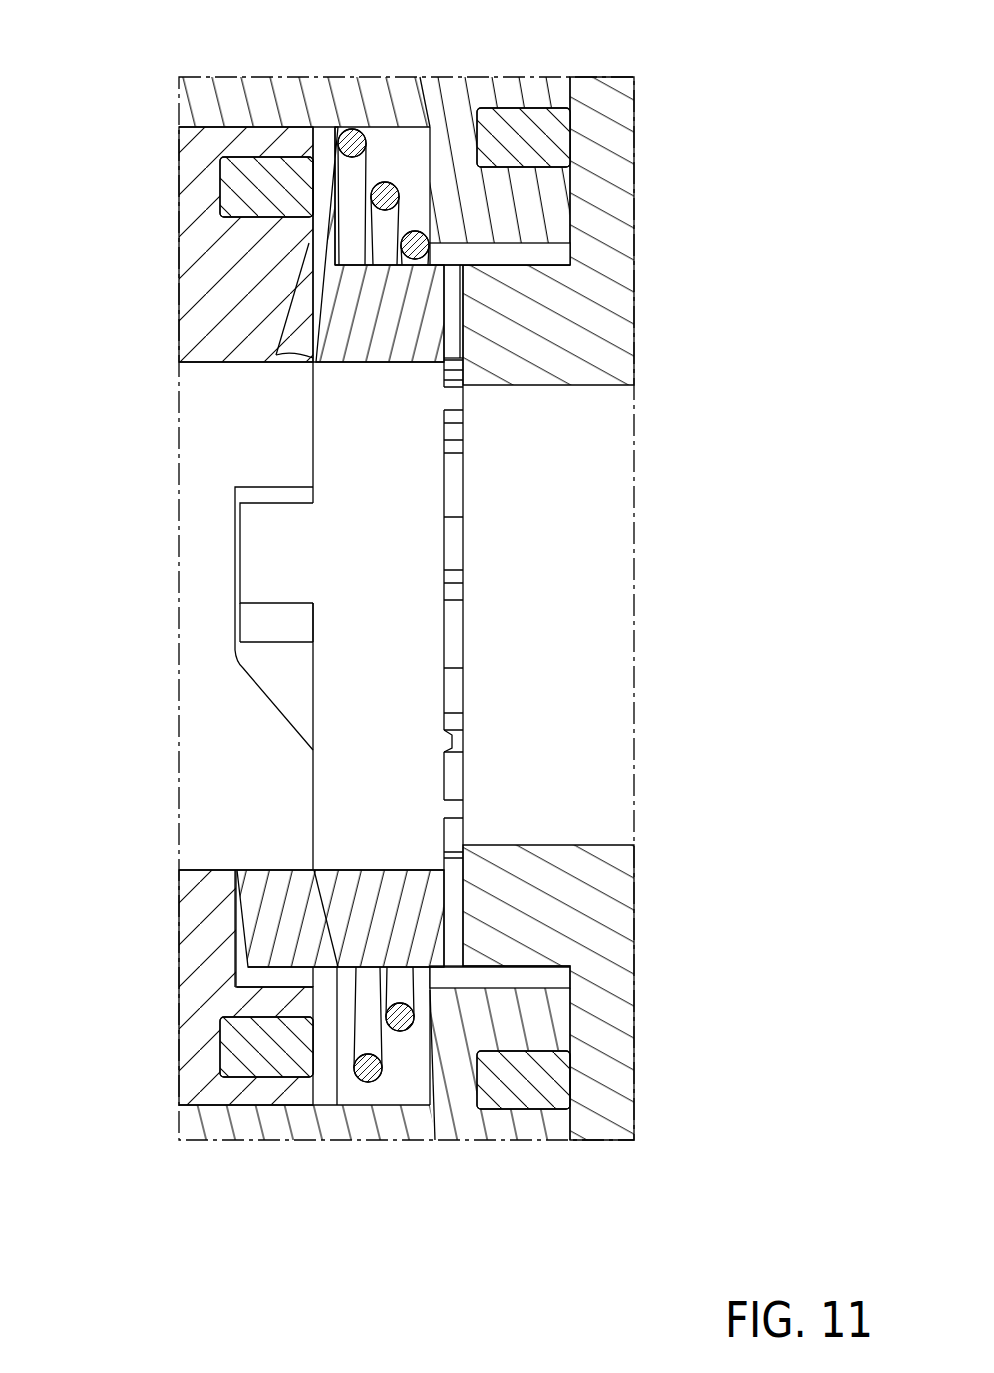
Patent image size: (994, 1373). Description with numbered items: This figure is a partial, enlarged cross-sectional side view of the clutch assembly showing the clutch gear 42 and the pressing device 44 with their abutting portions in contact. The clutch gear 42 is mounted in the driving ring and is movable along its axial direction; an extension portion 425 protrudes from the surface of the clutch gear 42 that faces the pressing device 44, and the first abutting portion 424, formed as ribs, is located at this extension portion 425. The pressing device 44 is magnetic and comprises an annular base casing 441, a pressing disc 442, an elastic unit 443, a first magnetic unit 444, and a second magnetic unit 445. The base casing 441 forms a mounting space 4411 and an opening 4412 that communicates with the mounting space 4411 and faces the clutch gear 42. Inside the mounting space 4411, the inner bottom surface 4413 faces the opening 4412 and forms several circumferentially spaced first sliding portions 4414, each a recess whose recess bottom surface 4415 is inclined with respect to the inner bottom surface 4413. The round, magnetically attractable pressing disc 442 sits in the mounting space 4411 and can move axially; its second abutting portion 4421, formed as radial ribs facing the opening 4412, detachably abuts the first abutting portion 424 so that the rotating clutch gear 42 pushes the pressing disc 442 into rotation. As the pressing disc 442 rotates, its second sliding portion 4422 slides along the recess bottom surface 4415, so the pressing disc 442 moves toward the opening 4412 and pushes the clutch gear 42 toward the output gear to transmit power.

The clutch gear 42 is at (651, 1156).
The pressing device 44 is at (162, 1156).
The first abutting portion 424 is at (450, 688).
The extension portion 425 is at (550, 917).
The base casing 441 is at (470, 1085).
The pressing disc 442 is at (330, 1075).
The elastic unit 443 is at (352, 140).
The first magnetic unit 444 is at (523, 140).
The second magnetic unit 445 is at (265, 190).
The mounting space 4411 is at (405, 1075).
The opening 4412 is at (575, 258).
The inner bottom surface 4413 is at (325, 305).
The first sliding portion 4414 is at (275, 657).
The recess bottom surface 4415 is at (292, 715).
The second abutting portion 4421 is at (447, 747).
The second sliding portion 4422 is at (268, 557).